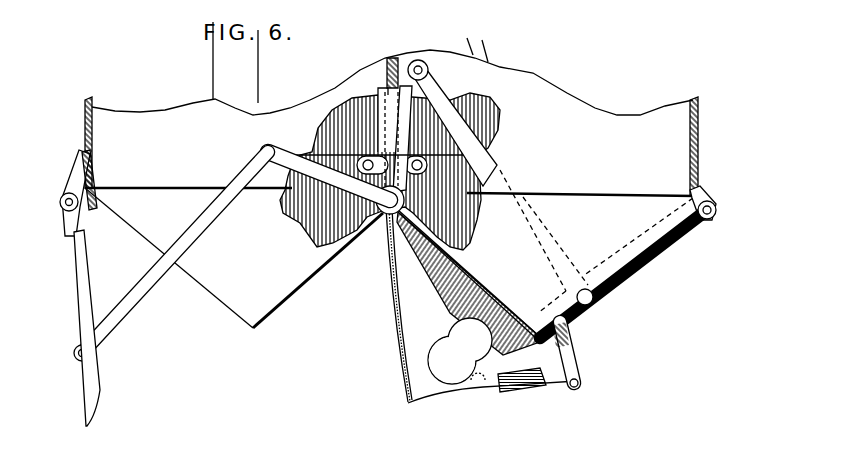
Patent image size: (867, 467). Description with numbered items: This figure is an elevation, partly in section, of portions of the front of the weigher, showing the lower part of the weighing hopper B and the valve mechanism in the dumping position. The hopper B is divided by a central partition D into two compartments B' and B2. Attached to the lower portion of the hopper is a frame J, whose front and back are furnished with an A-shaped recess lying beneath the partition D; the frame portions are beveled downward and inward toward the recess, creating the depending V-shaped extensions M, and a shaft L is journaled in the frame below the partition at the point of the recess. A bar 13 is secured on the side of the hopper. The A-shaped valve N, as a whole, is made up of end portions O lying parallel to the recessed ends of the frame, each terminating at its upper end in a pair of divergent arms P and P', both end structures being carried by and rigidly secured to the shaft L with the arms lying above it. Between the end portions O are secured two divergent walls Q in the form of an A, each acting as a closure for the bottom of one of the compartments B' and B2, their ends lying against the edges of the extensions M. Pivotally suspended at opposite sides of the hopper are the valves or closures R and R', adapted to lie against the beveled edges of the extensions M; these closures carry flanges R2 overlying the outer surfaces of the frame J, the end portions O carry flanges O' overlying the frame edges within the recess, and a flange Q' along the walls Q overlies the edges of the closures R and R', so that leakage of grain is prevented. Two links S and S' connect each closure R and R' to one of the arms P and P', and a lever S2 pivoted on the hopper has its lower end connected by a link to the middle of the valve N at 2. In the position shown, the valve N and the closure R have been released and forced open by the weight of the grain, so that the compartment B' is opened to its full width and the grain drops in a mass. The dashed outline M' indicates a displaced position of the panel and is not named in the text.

The frame J is at (80, 152).
The compartment B' is at (197, 142).
The weighing hopper B is at (716, 146).
The compartment B2 is at (502, 123).
The divergent arm P is at (327, 159).
The divergent arm P' is at (380, 139).
The central partition D is at (402, 61).
The link S' is at (452, 123).
The lever S2 is at (488, 48).
The bar 13 is at (393, 123).
The link S is at (175, 252).
The valve or closure R is at (71, 328).
The flange R2 is at (103, 367).
The V-shaped extension M is at (234, 258).
The door panel (hidden position) M' is at (596, 241).
The shaft L is at (380, 214).
The A-shaped valve N is at (469, 353).
The end portion O is at (468, 298).
The flange O' is at (469, 275).
The divergent wall Q is at (383, 305).
The flange Q' is at (507, 363).
The connection point 2 is at (480, 381).
The valve or closure R' is at (628, 262).